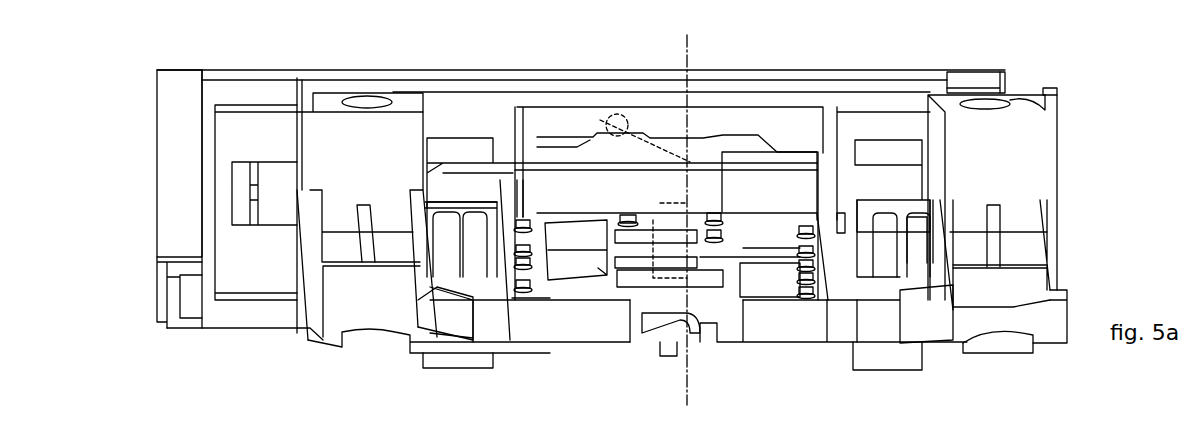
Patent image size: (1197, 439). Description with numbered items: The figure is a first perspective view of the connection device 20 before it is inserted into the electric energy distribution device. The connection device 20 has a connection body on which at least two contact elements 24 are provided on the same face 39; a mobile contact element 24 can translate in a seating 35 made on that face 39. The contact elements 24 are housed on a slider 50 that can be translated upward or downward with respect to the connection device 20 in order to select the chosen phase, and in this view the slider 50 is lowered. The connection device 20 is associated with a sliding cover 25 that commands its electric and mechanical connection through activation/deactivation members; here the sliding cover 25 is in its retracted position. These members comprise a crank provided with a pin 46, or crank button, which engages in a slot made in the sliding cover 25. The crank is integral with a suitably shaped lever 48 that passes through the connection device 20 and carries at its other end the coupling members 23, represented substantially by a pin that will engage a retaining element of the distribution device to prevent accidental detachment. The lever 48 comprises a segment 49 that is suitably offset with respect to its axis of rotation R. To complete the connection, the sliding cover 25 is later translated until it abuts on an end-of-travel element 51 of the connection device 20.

The connection device 20 is at (1080, 185).
The coupling members 23 is at (654, 326).
The contact elements 24 is at (577, 234).
The sliding cover 25 is at (177, 97).
The seating 35 is at (548, 262).
The face 39 is at (765, 228).
The pin 46 is at (616, 122).
The lever 48 is at (692, 173).
The segment 49 is at (653, 216).
The slider 50 is at (822, 188).
The end-of-travel element 51 is at (1052, 90).
The axis of rotation R is at (687, 50).